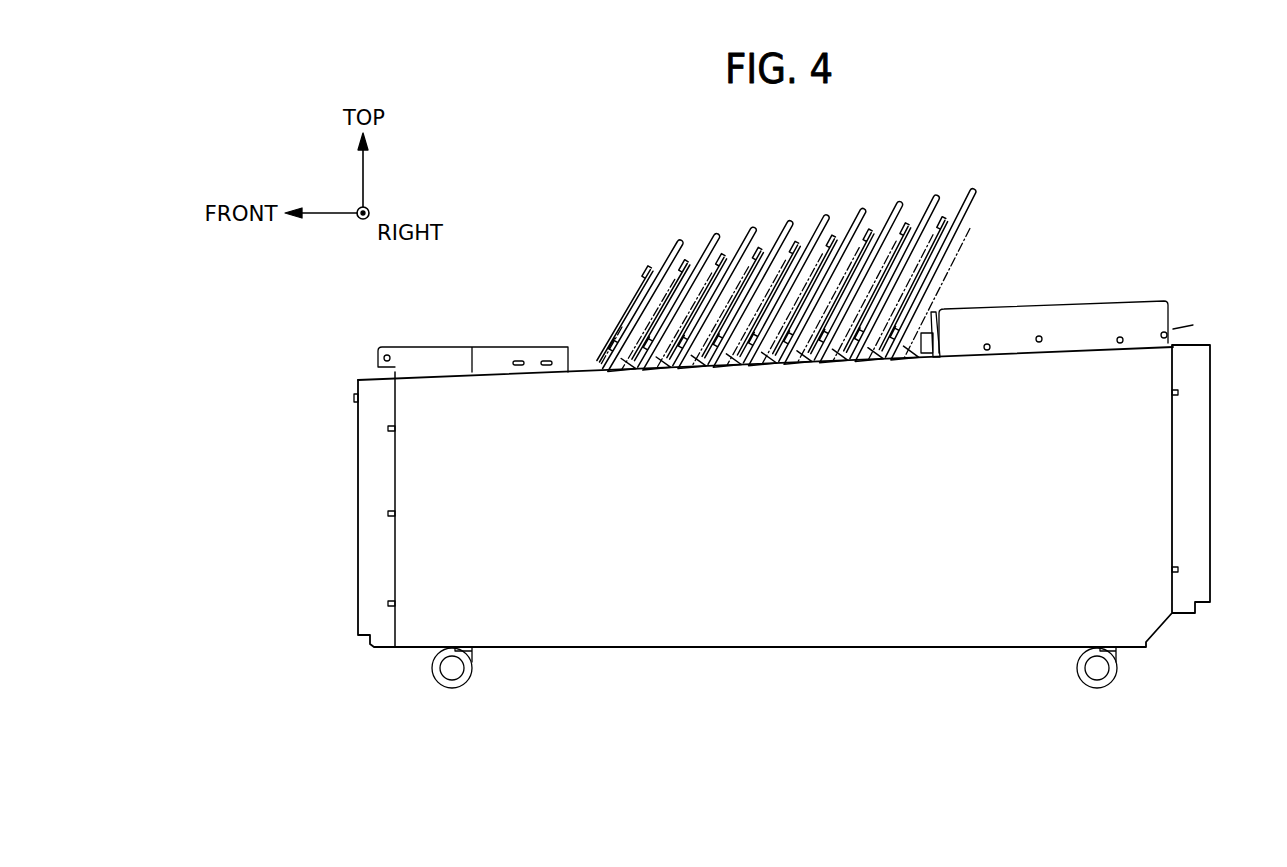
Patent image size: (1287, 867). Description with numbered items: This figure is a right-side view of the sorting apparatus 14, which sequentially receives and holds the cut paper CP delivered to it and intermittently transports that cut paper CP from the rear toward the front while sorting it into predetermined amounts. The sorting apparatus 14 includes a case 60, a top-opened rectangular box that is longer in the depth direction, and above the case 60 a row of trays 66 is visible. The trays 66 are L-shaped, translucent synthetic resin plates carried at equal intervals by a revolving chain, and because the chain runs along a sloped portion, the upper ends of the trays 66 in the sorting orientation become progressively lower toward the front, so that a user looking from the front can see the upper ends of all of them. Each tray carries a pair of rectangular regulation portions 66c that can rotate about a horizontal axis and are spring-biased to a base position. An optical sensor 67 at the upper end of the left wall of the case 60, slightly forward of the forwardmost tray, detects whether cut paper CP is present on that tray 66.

The sorting apparatus 14 is at (1148, 218).
The case 60 is at (1163, 625).
The trays 66 is at (780, 231).
The regulation portions 66c is at (940, 310).
The optical sensor 67 is at (546, 360).
The cut paper CP is at (622, 327).